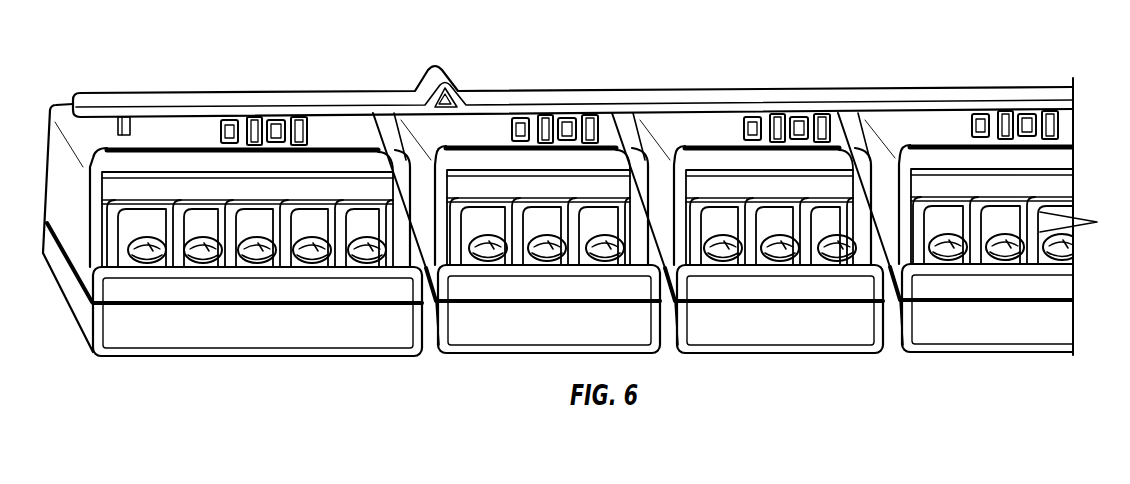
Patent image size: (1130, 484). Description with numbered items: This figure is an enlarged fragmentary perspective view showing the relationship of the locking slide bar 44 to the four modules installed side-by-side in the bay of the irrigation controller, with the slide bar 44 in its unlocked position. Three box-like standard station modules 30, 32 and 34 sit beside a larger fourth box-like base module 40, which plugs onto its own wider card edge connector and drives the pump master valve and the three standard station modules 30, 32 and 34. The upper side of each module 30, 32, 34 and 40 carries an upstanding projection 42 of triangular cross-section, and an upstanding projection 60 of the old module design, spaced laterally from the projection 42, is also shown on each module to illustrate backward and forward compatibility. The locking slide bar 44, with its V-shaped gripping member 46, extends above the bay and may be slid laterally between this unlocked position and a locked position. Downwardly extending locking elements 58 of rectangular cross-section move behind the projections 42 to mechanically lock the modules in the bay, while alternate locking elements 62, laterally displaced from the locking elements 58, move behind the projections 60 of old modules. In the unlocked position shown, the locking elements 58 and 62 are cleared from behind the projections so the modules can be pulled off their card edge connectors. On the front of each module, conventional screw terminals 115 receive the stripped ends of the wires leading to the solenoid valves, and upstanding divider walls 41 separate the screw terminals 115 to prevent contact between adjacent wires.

The standard station module 30 is at (476, 142).
The standard station module 32 is at (716, 141).
The standard station module 34 is at (936, 139).
The base module 40 is at (184, 145).
The upstanding divider wall 41 is at (280, 220).
The upstanding projection 42 is at (273, 120).
The locking slide bar 44 is at (812, 112).
The V-shaped gripping member 46 is at (426, 72).
The locking element 58 is at (298, 125).
The upstanding projection 60 is at (222, 128).
The alternate locking element 62 is at (255, 118).
The screw terminal 115 is at (203, 233).